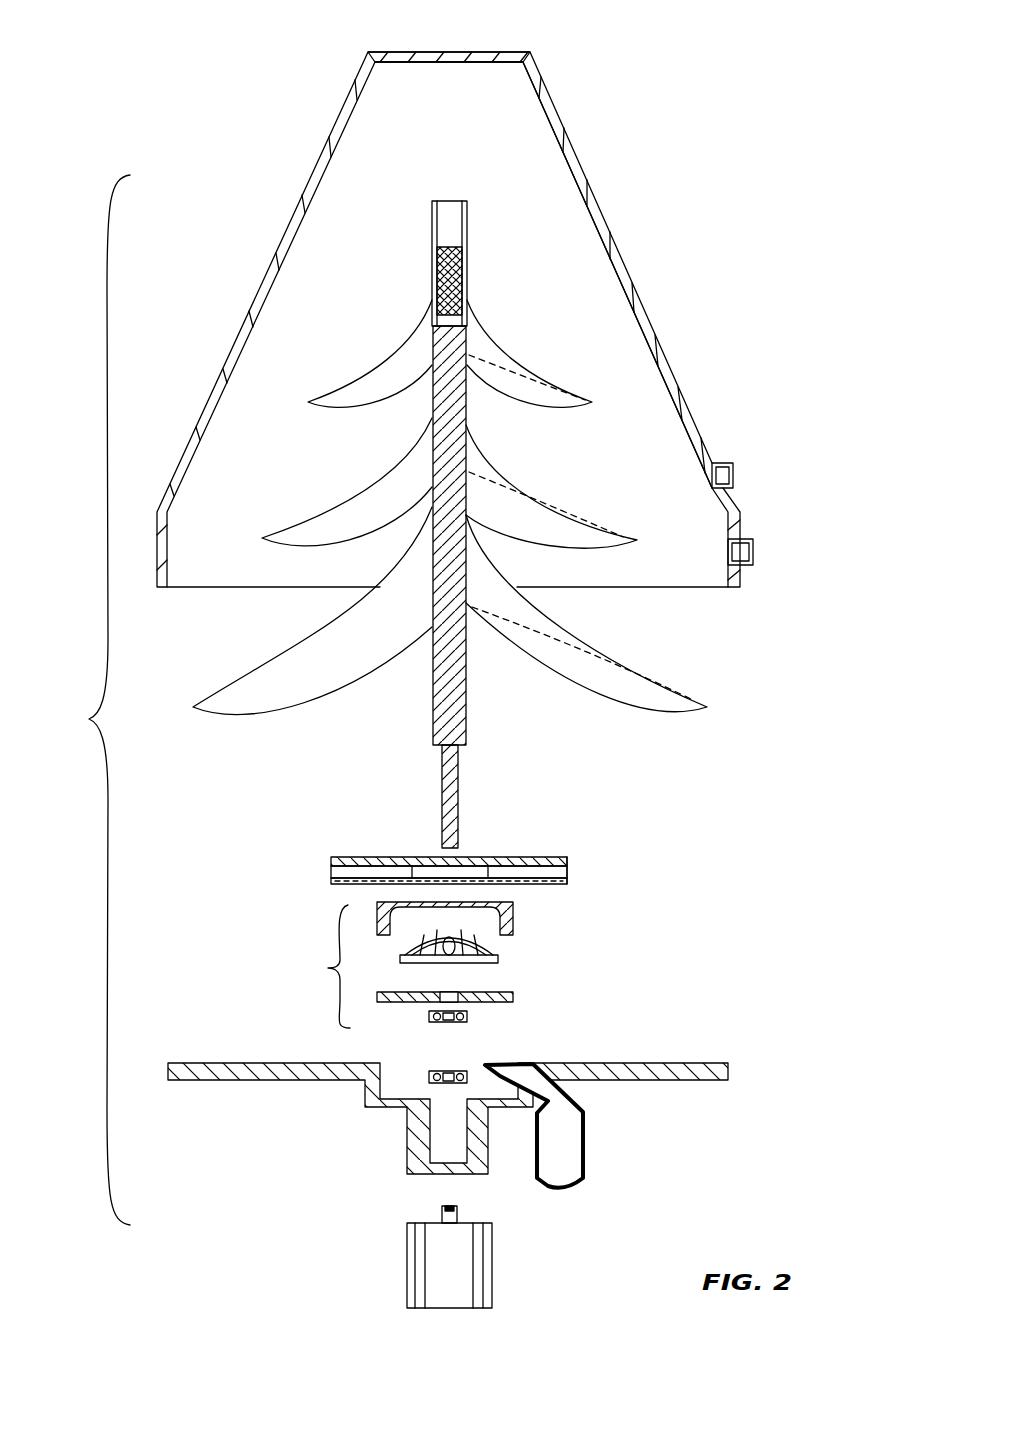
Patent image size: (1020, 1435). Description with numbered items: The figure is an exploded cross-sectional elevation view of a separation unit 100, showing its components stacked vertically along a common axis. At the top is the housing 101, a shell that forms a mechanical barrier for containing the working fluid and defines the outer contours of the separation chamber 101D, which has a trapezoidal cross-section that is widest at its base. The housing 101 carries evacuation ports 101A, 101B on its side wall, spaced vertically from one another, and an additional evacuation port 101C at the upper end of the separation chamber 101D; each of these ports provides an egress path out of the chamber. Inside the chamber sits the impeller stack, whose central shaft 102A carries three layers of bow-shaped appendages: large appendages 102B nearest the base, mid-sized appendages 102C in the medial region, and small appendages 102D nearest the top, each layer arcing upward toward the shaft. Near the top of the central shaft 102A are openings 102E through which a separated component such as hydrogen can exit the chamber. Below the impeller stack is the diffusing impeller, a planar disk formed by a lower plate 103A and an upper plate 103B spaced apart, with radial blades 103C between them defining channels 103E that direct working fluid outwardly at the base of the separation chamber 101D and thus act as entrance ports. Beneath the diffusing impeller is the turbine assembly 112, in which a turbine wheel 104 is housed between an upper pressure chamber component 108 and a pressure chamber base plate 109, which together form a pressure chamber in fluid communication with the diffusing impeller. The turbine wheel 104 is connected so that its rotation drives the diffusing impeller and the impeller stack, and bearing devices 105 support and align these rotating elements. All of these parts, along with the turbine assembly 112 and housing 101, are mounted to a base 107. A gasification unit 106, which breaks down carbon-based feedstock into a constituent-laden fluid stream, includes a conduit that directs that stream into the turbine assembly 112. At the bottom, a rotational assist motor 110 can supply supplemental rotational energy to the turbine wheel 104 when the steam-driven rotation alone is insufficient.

The separation unit 100 is at (87, 700).
The housing 101 is at (668, 242).
The evacuation port 101A is at (760, 470).
The evacuation port 101B is at (782, 554).
The evacuation port 101C is at (470, 42).
The separation chamber 101D is at (482, 125).
The central shaft 102A is at (450, 707).
The large appendages 102B is at (633, 676).
The mid-sized appendages 102C is at (552, 506).
The small appendages 102D is at (535, 383).
The openings 102E is at (425, 275).
The lower plate 103A is at (352, 884).
The upper plate 103B is at (378, 862).
The blades 103C is at (508, 872).
The channels 103E is at (578, 874).
The turbine wheel 104 is at (518, 951).
The bearing devices 105 is at (475, 1058).
The gasification unit 106 is at (610, 1140).
The base 107 is at (768, 1069).
The upper pressure chamber component 108 is at (538, 916).
The pressure chamber base plate 109 is at (538, 993).
The rotational assist motor 110 is at (521, 1258).
The turbine assembly 112 is at (321, 966).